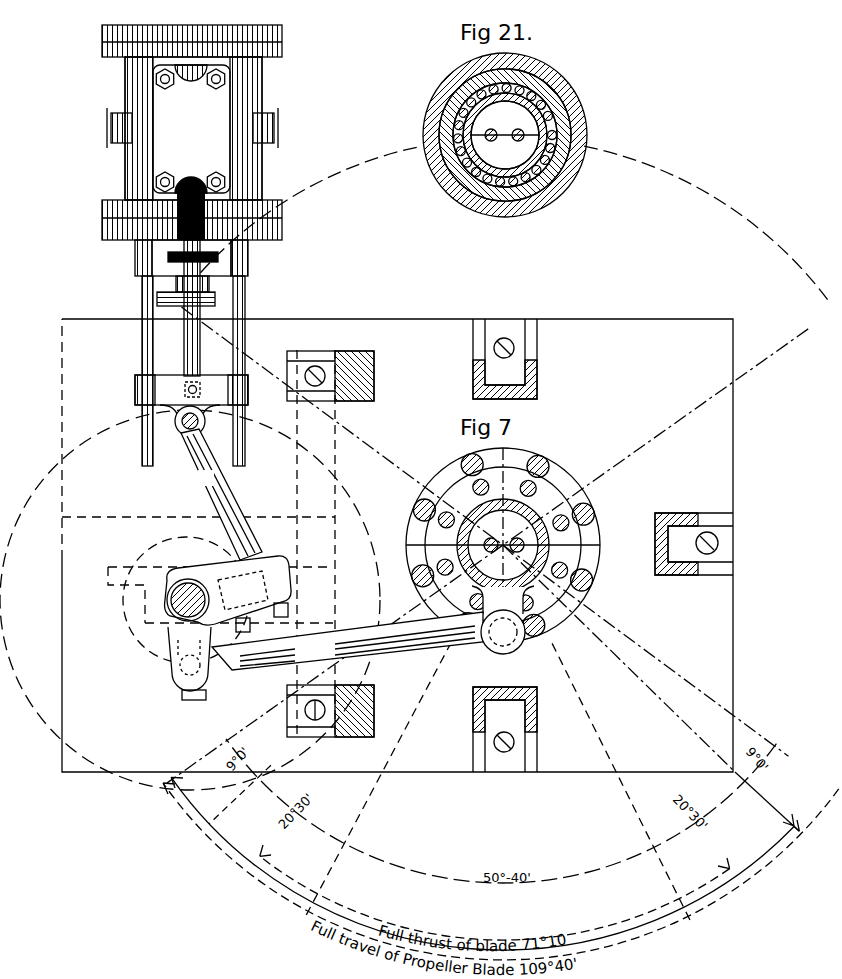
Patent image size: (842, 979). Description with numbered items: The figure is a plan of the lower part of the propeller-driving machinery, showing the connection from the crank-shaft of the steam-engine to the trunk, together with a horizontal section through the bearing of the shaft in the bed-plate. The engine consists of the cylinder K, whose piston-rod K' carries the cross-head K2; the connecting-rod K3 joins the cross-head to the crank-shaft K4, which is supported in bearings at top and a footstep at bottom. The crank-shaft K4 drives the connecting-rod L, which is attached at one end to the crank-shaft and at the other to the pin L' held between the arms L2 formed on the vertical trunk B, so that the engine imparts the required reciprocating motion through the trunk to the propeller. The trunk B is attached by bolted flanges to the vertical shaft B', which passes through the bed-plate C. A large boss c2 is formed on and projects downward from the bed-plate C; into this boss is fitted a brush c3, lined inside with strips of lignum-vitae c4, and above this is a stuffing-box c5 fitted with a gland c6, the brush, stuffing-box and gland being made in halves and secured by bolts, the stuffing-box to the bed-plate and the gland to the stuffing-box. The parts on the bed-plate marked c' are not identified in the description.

In FIG. 7, the cylinder K is at (192, 245).
In FIG. 7, the piston-rod K' is at (200, 308).
In FIG. 7, the cross-head K2 is at (191, 405).
In FIG. 7, the connecting-rod K3 is at (221, 494).
In FIG. 7, the crank-shaft K4 is at (168, 588).
In FIG. 7, the connecting-rod L is at (347, 641).
In FIG. 7, the pin L' is at (503, 632).
In FIG. 7, the arms L2 is at (503, 601).
In FIG. 21, the trunk B is at (505, 135).
In FIG. 7, the trunk B is at (503, 545).
In FIG. 21, the vertical shaft B' is at (505, 141).
In FIG. 7, the vertical shaft B' is at (504, 540).
In FIG. 7, the bed-plate C is at (397, 545).
In FIG. 21, the guide blocks / ball ring c' is at (524, 129).
In FIG. 7, the guide blocks / ball ring c' is at (510, 545).
In FIG. 21, the boss c2 is at (556, 82).
In FIG. 7, the boss c2 is at (593, 580).
In FIG. 21, the brush c3 is at (578, 108).
In FIG. 7, the brush c3 is at (504, 544).
In FIG. 21, the strips of lignum-vitae c4 is at (532, 70).
In FIG. 7, the stuffing-box c5 is at (545, 621).
In FIG. 7, the gland c6 is at (533, 598).